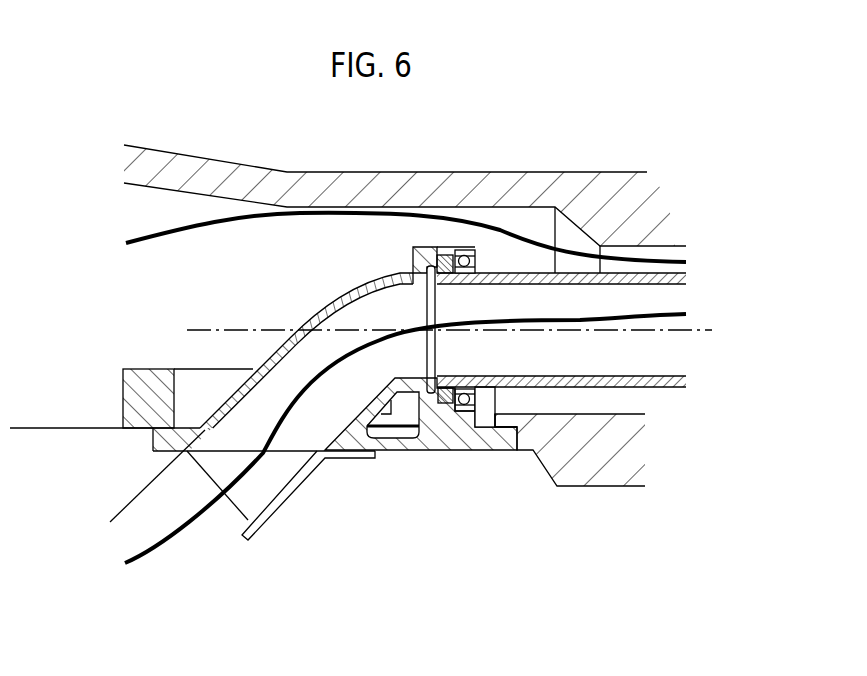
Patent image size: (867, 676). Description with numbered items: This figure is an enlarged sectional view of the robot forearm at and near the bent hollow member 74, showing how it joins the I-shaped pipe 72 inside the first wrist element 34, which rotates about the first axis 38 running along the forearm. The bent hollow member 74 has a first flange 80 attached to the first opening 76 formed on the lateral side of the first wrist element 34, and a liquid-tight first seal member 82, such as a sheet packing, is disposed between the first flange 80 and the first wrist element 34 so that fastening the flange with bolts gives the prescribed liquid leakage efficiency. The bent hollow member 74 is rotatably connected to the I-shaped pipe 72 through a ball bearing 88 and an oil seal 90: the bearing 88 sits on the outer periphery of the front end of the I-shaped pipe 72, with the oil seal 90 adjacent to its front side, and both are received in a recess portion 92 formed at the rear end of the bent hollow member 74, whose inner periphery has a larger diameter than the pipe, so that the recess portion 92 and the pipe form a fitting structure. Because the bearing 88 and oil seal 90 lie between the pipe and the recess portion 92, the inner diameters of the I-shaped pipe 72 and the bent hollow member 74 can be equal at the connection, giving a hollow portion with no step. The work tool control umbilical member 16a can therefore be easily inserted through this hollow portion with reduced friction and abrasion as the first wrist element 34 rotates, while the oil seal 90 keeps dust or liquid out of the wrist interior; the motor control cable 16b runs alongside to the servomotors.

The work tool control umbilical member 16a is at (175, 540).
The motor control cable 16b is at (207, 225).
The first wrist element 34 is at (610, 472).
The first axis 38 is at (706, 330).
The I-shaped pipe 72 is at (623, 387).
The bent hollow member 74 is at (433, 433).
The first opening 76 is at (277, 470).
The first flange 80 is at (503, 440).
The first seal member 82 is at (508, 423).
The bearing 88 is at (470, 252).
The oil seal 90 is at (444, 255).
The recess portion 92 is at (432, 247).